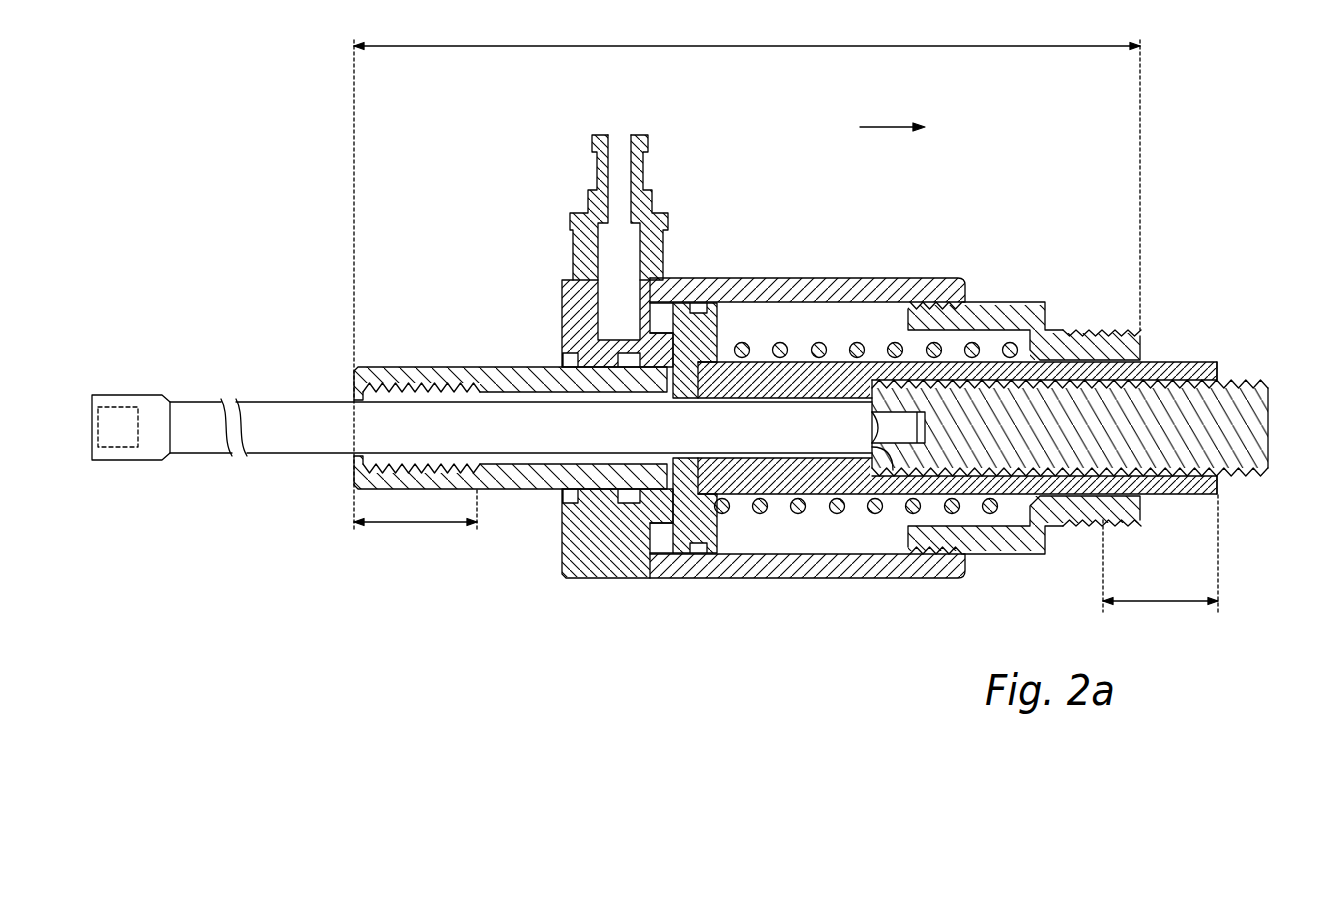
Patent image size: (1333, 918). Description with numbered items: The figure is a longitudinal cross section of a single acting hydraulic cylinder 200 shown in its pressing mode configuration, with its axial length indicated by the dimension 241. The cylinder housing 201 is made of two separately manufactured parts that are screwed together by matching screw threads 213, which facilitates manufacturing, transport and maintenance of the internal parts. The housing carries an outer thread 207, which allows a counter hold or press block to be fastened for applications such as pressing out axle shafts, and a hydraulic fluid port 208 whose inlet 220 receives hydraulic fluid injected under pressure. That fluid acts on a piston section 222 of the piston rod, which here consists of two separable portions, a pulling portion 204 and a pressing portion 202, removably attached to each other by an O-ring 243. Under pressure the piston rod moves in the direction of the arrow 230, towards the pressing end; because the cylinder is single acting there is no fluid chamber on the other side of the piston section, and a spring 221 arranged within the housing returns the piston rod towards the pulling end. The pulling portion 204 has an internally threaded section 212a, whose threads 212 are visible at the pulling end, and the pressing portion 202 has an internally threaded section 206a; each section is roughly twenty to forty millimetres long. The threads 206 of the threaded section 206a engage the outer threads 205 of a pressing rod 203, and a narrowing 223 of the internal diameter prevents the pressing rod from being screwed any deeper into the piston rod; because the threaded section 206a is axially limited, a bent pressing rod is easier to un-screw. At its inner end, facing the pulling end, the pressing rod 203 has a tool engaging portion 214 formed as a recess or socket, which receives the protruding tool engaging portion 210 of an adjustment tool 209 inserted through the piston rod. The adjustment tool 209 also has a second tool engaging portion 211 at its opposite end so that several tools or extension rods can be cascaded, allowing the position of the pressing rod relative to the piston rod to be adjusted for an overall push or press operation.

The hydraulic cylinder 200 is at (752, 176).
The cylinder housing 201 is at (925, 578).
The pressing portion of the piston rod 202 is at (1163, 480).
The pressing rod 203 is at (1268, 414).
The pulling portion of the piston rod 204 is at (523, 490).
The outer threads 205 is at (1250, 475).
The threads 206 is at (1219, 380).
The internally threaded section 206a is at (1160, 565).
The outer thread 207 is at (1088, 325).
The hydraulic fluid port 208 is at (642, 137).
The adjustment tool 209 is at (270, 445).
The tool engaging portion 210 is at (890, 430).
The second tool engaging portion 211 is at (138, 451).
The threaded portion 212 is at (386, 367).
The internally threaded section 212a is at (415, 526).
The screw threads 213 is at (933, 294).
The tool engaging portion 214 is at (882, 475).
The inlet 220 is at (618, 130).
The spring 221 is at (853, 342).
The piston section 222 is at (693, 326).
The narrowing 223 is at (872, 460).
The arrow 230 is at (892, 112).
The axial length 241 is at (747, 271).
The O-ring 243 is at (672, 507).